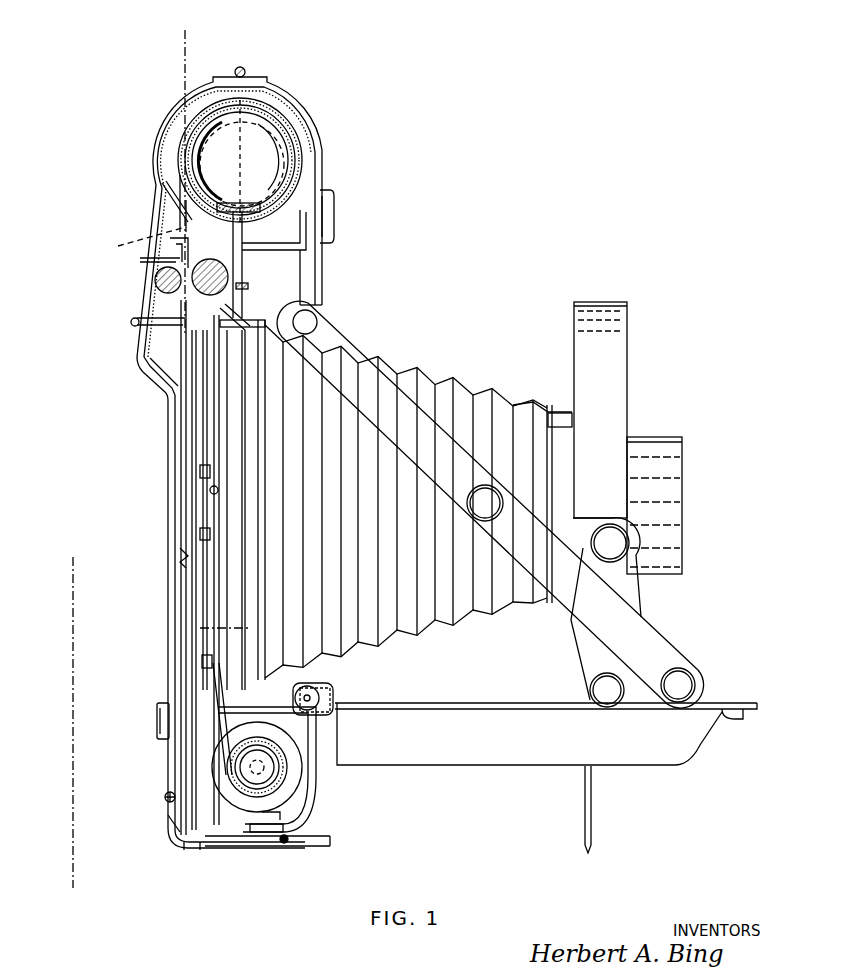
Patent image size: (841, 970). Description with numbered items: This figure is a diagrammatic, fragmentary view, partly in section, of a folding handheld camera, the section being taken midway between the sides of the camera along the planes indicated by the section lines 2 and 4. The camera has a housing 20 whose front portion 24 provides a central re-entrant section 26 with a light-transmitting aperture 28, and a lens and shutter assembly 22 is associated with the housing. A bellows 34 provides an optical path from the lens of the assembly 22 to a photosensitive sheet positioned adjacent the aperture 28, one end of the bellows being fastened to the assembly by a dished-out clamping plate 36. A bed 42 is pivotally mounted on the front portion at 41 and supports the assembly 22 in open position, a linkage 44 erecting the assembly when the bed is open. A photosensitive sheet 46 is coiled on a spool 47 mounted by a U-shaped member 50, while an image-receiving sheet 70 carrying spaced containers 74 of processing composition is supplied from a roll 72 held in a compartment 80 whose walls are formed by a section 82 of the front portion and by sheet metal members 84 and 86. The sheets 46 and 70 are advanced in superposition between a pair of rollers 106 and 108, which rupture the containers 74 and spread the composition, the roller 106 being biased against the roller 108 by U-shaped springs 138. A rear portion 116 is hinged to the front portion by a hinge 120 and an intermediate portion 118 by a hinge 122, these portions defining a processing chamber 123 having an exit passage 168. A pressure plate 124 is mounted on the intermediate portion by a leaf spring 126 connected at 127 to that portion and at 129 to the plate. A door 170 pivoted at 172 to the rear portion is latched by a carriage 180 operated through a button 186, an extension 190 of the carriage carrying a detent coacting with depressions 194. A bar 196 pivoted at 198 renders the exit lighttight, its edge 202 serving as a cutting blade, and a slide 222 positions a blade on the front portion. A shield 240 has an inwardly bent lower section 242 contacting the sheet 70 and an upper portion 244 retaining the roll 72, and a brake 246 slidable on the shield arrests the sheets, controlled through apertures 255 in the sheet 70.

The section line 2- 2 is at (185, 30).
The section line 4- 4 is at (97, 558).
The housing 20 is at (120, 377).
The lens and shutter assembly 22 is at (632, 361).
The front portion 24 is at (317, 124).
The re-entrant section 26 is at (243, 317).
The light-transmitting aperture 28 is at (232, 453).
The bellows 34 is at (430, 373).
The clamping plate 36 is at (555, 412).
The pivot 41 is at (320, 690).
The bed 42 is at (548, 748).
The linkage 44 is at (553, 560).
The photosensitive sheet 46 is at (293, 806).
The spool 47 is at (288, 769).
The U-shaped member 50 is at (300, 803).
The image-receiving sheet 70 is at (180, 162).
The roll 72 is at (284, 117).
The containers 74 is at (237, 198).
The compartment 80 is at (218, 150).
The section of front portion 82 is at (312, 157).
The sheet metal member 84 is at (292, 210).
The sheet metal member 86 is at (232, 203).
The roller 106 is at (249, 288).
The roller 108 is at (160, 283).
The rear portion 116 is at (134, 220).
The intermediate portion 118 is at (215, 570).
The hinge 120 is at (240, 66).
The hinge 122 is at (236, 846).
The processing chamber 123 is at (152, 374).
The pressure plate 124 is at (219, 489).
The leaf spring 126 is at (210, 412).
The connection of leaf spring to intermediate portion 127 is at (202, 471).
The connection of leaf spring to plate 129 is at (205, 662).
The U-shaped springs 138 is at (263, 125).
The exit passage 168 is at (173, 826).
The door 170 is at (165, 450).
The pivot of door 172 is at (132, 324).
The carriage 180 is at (160, 705).
The button 186 is at (169, 712).
The extension of carriage 190 is at (183, 604).
The depressions 194 is at (180, 556).
The bar 196 is at (183, 850).
The pivot of bar 198 is at (165, 798).
The edge of bar 202 is at (203, 852).
The slide 222 is at (284, 846).
The shield 240 is at (166, 204).
The inwardly bent lower section of shield 242 is at (166, 324).
The upper portion of shield 244 is at (163, 186).
The brake 246 is at (140, 260).
The apertures 255 is at (131, 243).